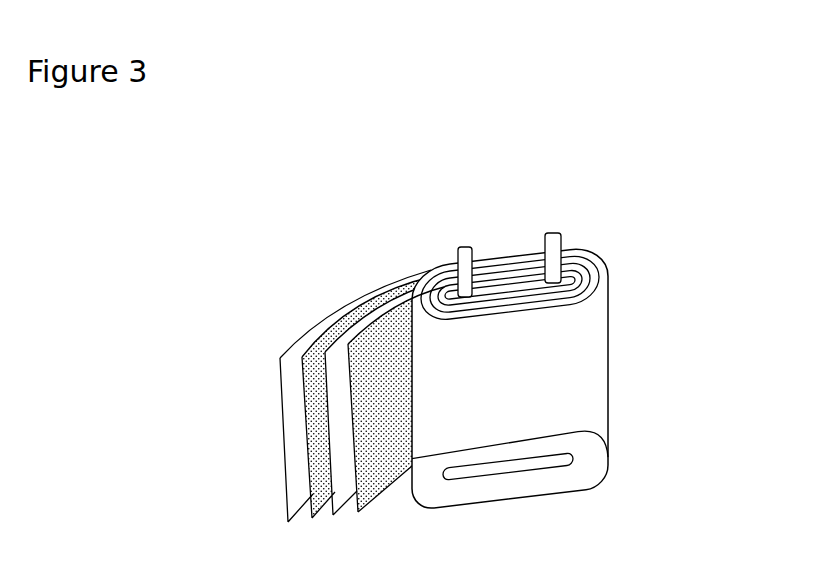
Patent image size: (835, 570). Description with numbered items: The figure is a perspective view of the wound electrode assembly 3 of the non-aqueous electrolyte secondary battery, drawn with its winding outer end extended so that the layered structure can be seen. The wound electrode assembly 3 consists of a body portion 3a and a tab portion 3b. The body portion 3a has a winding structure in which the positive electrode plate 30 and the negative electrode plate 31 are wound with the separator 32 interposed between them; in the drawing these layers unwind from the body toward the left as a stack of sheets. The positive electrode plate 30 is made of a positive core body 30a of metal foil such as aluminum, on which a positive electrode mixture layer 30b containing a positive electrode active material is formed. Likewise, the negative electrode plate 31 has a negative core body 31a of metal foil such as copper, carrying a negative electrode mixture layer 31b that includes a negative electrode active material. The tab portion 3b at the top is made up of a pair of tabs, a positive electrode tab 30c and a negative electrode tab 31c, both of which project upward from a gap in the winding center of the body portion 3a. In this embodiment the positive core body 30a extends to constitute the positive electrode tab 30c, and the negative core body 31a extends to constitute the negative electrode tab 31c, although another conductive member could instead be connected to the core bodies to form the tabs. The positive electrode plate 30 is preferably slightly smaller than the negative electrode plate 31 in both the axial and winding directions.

The wound electrode assembly 3 is at (529, 378).
The body portion 3a is at (590, 396).
The tab portion 3b is at (537, 227).
The positive electrode plate 30 is at (380, 474).
The positive core body 30a is at (464, 246).
The positive electrode mixture layer 30b is at (375, 323).
The positive electrode tab 30c is at (485, 249).
The negative electrode plate 31 is at (323, 490).
The negative core body 31a is at (553, 233).
The negative electrode mixture layer 31b is at (322, 343).
The negative electrode tab 31c is at (583, 242).
The separator 32 is at (296, 396).